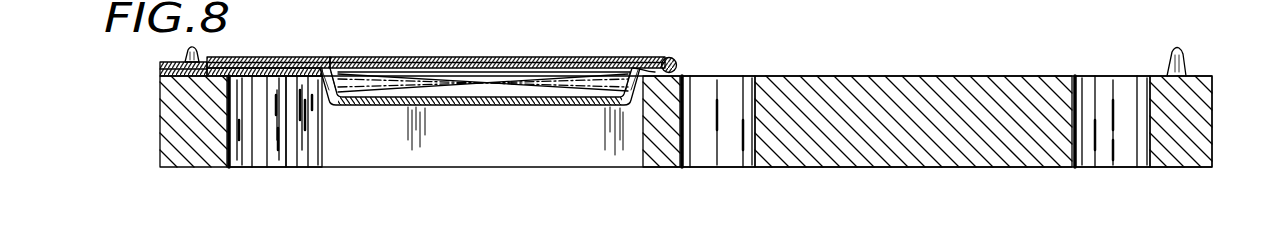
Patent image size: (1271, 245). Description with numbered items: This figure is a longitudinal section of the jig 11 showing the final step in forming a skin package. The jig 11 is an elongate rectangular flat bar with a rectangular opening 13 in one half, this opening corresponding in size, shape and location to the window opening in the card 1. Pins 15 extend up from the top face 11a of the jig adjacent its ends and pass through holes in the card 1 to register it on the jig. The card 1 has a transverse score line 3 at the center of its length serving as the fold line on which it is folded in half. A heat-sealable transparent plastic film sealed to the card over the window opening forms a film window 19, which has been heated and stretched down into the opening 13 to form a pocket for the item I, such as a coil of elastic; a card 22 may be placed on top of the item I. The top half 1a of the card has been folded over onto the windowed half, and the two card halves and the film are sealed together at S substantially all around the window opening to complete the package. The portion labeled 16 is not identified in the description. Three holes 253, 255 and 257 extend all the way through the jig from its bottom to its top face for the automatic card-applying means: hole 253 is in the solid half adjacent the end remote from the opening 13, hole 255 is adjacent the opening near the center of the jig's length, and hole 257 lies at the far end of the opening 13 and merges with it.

The card 1 is at (497, 52).
The top half of the card 1a is at (372, 57).
The transverse score line 3 is at (682, 70).
The seal S is at (666, 62).
The item I is at (582, 57).
The jig 11 is at (152, 126).
The top face of the jig 11a is at (968, 75).
The rectangular opening 13 is at (576, 148).
The pins 15 is at (184, 52).
The insert block 16 is at (278, 78).
The film window 19 is at (390, 104).
The card 22 is at (471, 76).
The hole 253 is at (1102, 153).
The hole 255 is at (707, 153).
The hole 257 is at (297, 153).